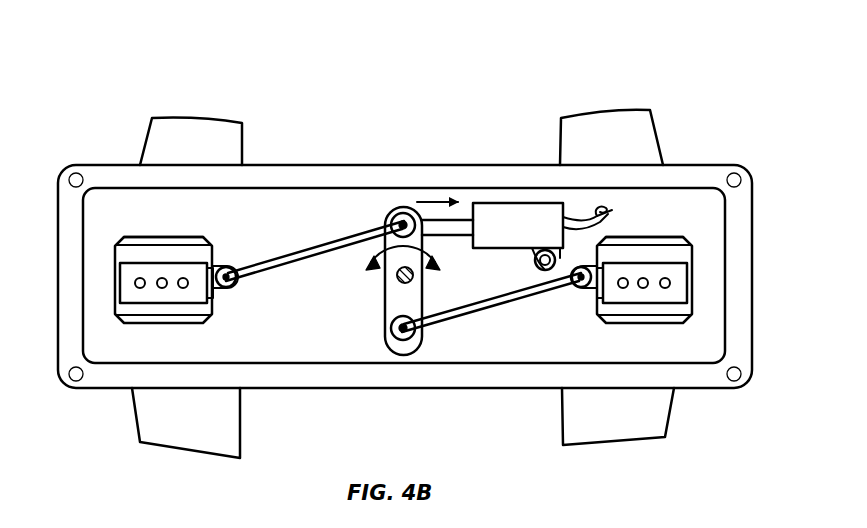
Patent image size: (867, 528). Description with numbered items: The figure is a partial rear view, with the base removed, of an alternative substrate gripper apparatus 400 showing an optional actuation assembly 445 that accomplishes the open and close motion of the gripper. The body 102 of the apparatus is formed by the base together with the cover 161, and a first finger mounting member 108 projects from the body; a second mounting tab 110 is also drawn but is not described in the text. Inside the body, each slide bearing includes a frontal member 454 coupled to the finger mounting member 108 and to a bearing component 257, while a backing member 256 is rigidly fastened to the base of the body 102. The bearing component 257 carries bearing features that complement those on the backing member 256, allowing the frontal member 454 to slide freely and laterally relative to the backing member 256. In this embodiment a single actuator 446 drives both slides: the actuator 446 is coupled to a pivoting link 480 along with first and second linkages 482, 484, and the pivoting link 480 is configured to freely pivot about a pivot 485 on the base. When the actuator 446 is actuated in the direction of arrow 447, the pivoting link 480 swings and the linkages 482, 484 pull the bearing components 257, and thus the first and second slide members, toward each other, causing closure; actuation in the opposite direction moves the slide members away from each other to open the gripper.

The substrate gripper apparatus 400 is at (607, 82).
The body 102 is at (105, 163).
The first mounting tab 110 is at (227, 137).
The first finger mounting member 108 is at (618, 137).
The cover 161 is at (753, 212).
The actuation assembly 445 is at (475, 160).
The arrow 447 is at (440, 200).
The actuator 446 is at (512, 250).
The backing member 256 is at (148, 263).
The frontal member 454 is at (167, 237).
The bearing component 257 is at (183, 318).
The second linkage 484 is at (297, 249).
The first linkage 482 is at (502, 308).
The pivoting link 480 is at (400, 305).
The pivot 485 is at (396, 277).